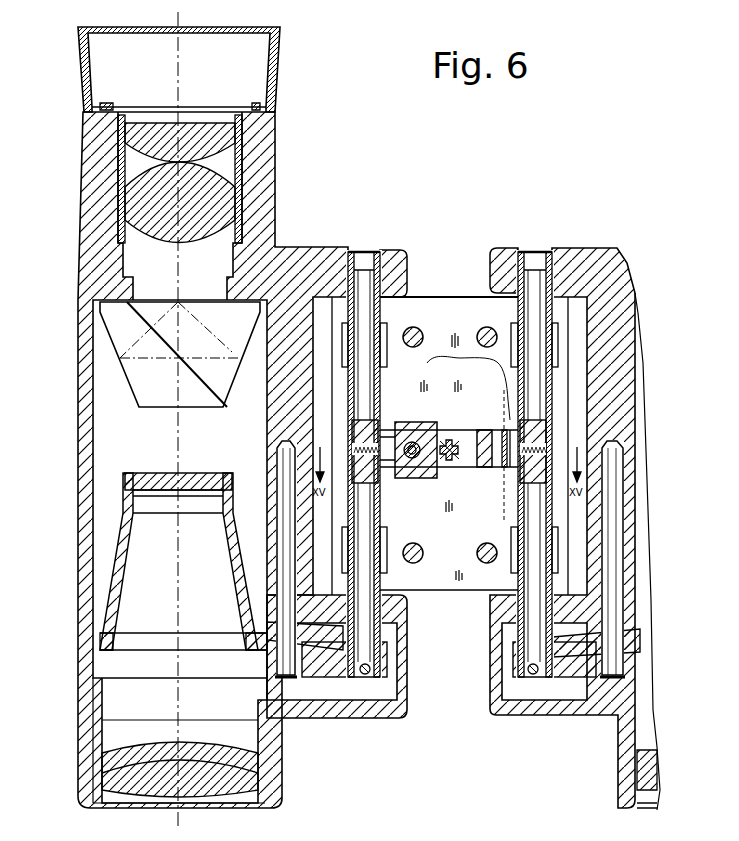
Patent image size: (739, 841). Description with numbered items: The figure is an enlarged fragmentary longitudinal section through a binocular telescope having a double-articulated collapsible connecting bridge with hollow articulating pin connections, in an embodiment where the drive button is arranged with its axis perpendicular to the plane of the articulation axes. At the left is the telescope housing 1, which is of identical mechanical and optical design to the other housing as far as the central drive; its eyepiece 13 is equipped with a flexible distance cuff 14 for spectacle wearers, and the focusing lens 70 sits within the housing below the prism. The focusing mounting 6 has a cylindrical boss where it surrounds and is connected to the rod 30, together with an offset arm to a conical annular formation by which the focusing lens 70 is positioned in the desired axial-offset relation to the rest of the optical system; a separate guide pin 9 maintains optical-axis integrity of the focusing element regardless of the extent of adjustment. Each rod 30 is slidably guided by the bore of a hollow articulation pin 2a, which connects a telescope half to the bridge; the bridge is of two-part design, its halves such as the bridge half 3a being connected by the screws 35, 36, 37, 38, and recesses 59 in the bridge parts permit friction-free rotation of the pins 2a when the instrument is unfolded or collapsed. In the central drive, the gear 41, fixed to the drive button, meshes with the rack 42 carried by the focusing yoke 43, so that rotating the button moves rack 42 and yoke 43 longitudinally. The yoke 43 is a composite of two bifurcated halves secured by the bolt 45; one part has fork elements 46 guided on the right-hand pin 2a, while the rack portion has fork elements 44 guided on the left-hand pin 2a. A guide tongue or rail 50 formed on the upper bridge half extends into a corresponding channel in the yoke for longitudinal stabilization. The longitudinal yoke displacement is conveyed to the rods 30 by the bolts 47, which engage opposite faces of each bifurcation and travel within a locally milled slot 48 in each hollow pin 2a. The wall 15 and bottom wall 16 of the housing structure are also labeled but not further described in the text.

The telescope housing 1 is at (78, 622).
The hollow articulation pin 2a is at (552, 262).
The bridge half 3a is at (445, 300).
The focusing mounting 6 is at (321, 650).
The guide pin 9 is at (284, 467).
The eyepiece 13 is at (72, 112).
The flexible distance cuff 14 is at (281, 74).
The housing wall 15 is at (318, 262).
The bottom wall 16 is at (412, 690).
The rod 30 is at (363, 676).
The screw 35 is at (486, 564).
The screw 36 is at (416, 564).
The screw 37 is at (488, 326).
The screw 38 is at (412, 326).
The gear 41 is at (449, 443).
The rack 42 is at (437, 422).
The focusing yoke 43 is at (465, 458).
The fork elements 44 is at (388, 463).
The bolt 45 is at (414, 458).
The fork elements 46 is at (492, 470).
The bolt 47 is at (350, 435).
The milled slot 48 is at (390, 436).
The guide tongue or rail 50 is at (460, 562).
The recess 59 is at (556, 340).
The focusing lens 70 is at (156, 480).